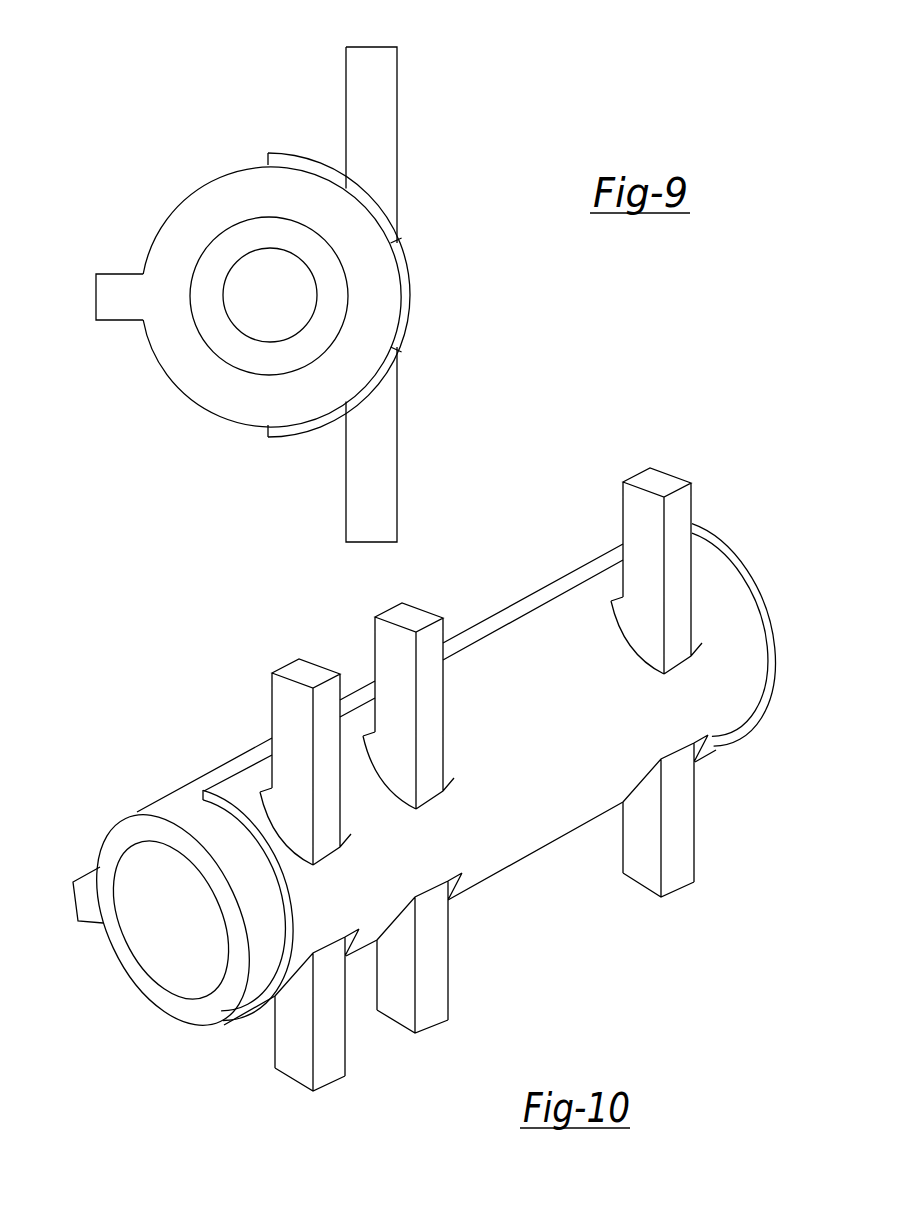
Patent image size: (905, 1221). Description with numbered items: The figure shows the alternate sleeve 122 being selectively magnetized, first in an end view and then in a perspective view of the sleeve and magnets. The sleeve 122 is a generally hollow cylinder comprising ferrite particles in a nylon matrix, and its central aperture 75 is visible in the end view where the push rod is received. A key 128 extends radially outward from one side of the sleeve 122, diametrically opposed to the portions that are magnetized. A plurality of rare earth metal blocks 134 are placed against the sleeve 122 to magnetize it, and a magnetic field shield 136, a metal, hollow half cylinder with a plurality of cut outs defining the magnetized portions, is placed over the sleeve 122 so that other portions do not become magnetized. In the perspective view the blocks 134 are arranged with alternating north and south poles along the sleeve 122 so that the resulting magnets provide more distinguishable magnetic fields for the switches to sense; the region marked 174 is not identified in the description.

In FIG. 9, the alternate sleeve 122 is at (178, 183).
In FIG. 10, the alternate sleeve 122 is at (118, 820).
In FIG. 9, the key 128 is at (96, 292).
In FIG. 10, the key 128 is at (75, 890).
In FIG. 9, the rare earth metal blocks 134 is at (388, 44).
In FIG. 10, the rare earth metal blocks 134 is at (627, 546).
In FIG. 9, the magnetic field shield 136 is at (300, 150).
In FIG. 10, the magnetic field shield 136 is at (527, 800).
In FIG. 9, the annular ring 174 is at (243, 235).
In FIG. 9, the aperture 75 is at (255, 322).